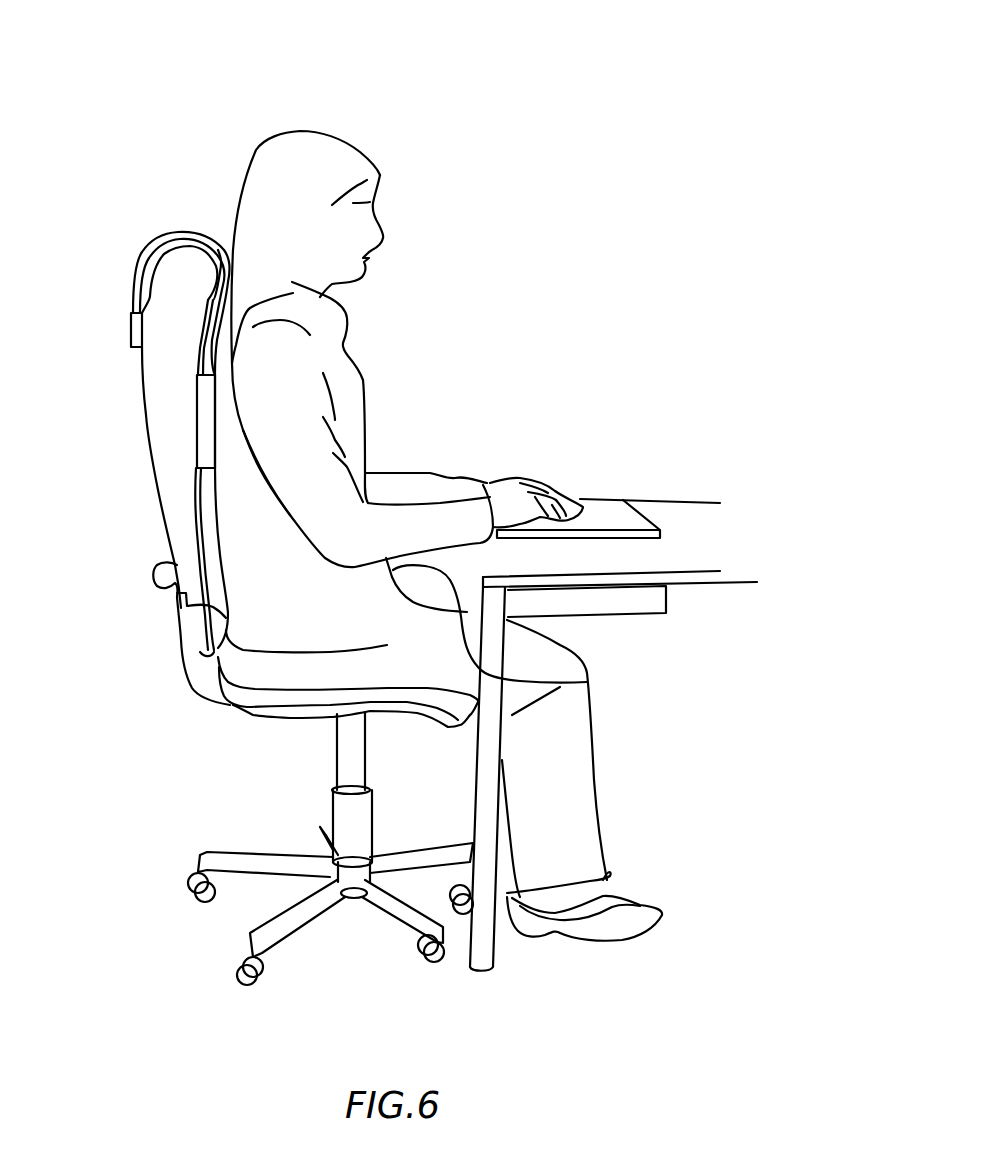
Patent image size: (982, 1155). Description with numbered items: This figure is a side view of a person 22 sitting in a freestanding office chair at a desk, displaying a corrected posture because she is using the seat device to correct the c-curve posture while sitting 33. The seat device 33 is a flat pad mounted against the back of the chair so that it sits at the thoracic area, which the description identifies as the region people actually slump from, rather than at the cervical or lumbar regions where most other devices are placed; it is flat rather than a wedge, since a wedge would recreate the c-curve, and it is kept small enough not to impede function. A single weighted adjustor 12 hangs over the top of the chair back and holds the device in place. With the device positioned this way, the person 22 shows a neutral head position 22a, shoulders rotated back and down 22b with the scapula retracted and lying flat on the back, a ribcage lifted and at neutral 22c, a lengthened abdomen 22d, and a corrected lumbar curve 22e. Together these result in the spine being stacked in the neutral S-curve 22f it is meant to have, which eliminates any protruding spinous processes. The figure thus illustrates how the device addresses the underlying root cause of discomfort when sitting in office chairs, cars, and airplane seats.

The person 22 is at (250, 103).
The neutral head position 22a is at (337, 293).
The shoulders rotated back and down 22b is at (362, 327).
The ribcage lifted and at neutral 22c is at (380, 473).
The abdomen lengthened 22d is at (557, 685).
The corrected lumbar curve 22e is at (185, 608).
The spine stacked in the neutral S-curve 22f is at (212, 377).
The single weighted adjustor 12 is at (132, 330).
The seat device to correct the c-curve posture while sitting 33 is at (207, 437).